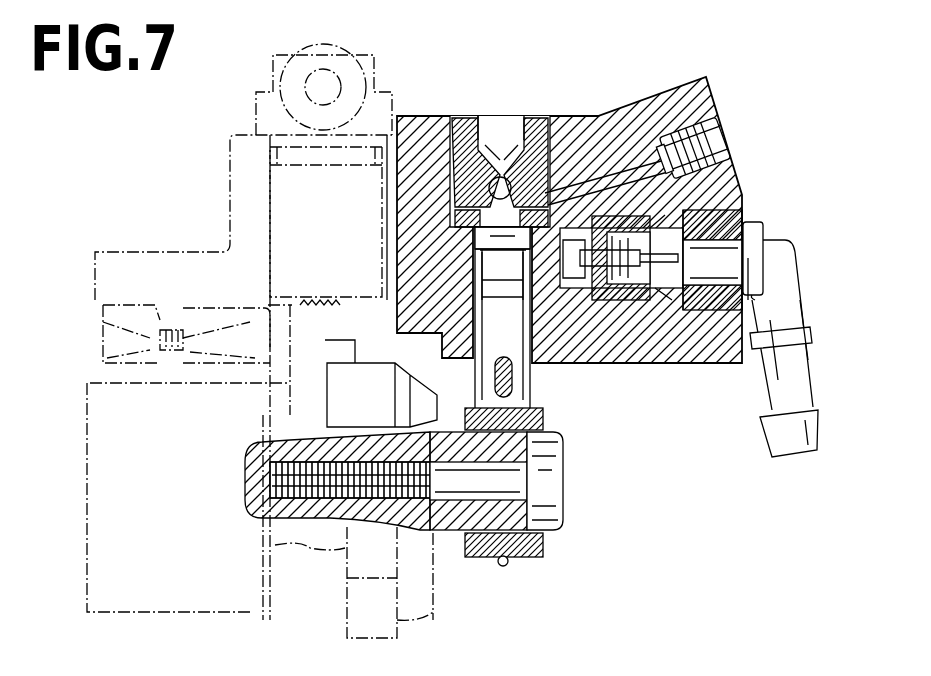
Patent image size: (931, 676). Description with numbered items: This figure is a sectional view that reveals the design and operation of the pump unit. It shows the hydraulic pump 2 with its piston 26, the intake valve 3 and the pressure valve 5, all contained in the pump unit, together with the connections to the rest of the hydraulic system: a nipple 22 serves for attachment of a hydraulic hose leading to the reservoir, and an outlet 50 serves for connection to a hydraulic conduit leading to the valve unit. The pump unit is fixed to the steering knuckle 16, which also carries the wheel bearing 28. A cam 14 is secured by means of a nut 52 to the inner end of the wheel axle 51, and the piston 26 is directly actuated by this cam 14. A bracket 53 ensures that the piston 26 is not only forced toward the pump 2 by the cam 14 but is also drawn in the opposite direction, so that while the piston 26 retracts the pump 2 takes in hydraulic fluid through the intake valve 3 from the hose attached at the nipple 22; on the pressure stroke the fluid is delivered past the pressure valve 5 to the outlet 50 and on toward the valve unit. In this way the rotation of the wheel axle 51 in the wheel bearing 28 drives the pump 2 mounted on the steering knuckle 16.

The hydraulic pump 2 is at (517, 262).
The intake valve 3 is at (652, 318).
The pressure valve 5 is at (563, 150).
The cam 14 is at (558, 531).
The steering knuckle 16 is at (190, 272).
The nipple 22 is at (762, 396).
The piston 26 is at (531, 377).
The wheel bearing 28 is at (110, 347).
The outlet 50 is at (727, 134).
The wheel axle 51 is at (250, 607).
The nut 52 is at (548, 480).
The bracket 53 is at (507, 567).